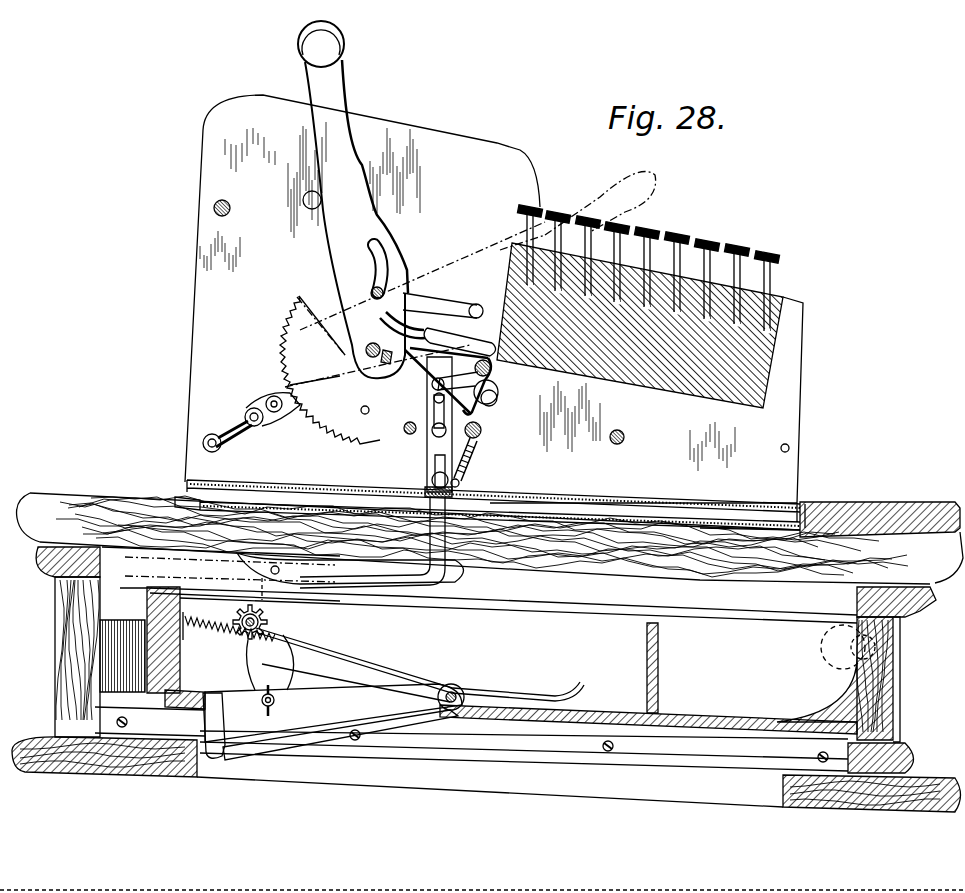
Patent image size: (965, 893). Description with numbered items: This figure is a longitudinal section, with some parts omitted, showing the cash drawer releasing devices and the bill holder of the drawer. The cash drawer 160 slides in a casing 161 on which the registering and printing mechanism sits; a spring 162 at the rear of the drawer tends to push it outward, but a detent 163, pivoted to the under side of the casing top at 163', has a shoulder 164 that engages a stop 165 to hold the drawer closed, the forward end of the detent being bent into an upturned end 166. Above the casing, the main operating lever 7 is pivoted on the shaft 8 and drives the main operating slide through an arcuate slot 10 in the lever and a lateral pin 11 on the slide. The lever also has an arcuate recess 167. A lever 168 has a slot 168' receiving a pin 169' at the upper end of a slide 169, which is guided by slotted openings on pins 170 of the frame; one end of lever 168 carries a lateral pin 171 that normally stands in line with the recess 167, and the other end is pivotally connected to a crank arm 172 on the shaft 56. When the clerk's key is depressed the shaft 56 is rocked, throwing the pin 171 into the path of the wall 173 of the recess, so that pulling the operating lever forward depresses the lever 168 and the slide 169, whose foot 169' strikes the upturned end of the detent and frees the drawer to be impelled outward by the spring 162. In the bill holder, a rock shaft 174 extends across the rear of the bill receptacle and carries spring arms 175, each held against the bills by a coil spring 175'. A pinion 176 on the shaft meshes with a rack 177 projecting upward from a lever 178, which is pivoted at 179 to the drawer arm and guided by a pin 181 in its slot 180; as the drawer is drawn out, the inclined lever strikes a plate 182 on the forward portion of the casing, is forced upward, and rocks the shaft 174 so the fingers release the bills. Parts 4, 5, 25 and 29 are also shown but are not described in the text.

The comb plate 4 is at (745, 378).
The side plate 5 is at (792, 350).
The main operating lever 7 is at (333, 93).
The shaft 8 is at (365, 350).
The arcuate slot 10 is at (380, 246).
The lateral pin 11 is at (372, 289).
The keys 25 is at (672, 236).
The stud 29 is at (238, 200).
The shaft 56 is at (493, 376).
The cash drawer 160 is at (885, 697).
The casing 161 is at (820, 548).
The spring 162 is at (145, 668).
The detent 163 is at (304, 513).
The detent pivot 163' is at (302, 603).
The shoulder 164 is at (197, 580).
The stop 165 is at (135, 570).
The upturned end 166 is at (437, 545).
The arcuate recess 167 is at (405, 305).
The lever 168 is at (418, 412).
The slot 168' is at (422, 406).
The slide 169 is at (418, 427).
The pin and foot of slide 169' is at (426, 422).
The pins 170 is at (450, 421).
The lateral pin 171 is at (398, 360).
The crank arm 172 is at (492, 383).
The wall 173 is at (407, 320).
The rock shaft 174 is at (240, 618).
The spring arms 175 is at (420, 664).
The coil spring 175' is at (202, 640).
The pinion 176 is at (236, 645).
The rack 177 is at (264, 665).
The lever 178 is at (340, 735).
The pivot 179 is at (456, 690).
The slot 180 is at (262, 699).
The pin 181 is at (272, 705).
The plate 182 is at (850, 743).